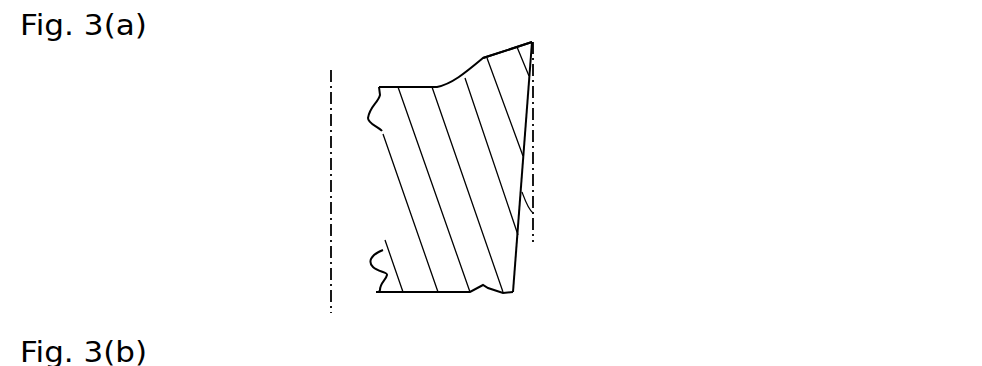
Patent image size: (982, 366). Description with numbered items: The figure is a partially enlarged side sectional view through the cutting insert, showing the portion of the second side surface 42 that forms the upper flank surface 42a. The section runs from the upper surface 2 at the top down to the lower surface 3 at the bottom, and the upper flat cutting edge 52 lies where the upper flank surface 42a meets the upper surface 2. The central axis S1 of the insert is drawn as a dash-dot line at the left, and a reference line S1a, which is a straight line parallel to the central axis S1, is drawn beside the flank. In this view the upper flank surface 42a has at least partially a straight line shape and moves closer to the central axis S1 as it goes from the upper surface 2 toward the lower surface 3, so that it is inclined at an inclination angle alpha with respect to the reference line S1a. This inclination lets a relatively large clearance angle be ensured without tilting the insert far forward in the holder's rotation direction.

In FIG. 3A, the upper surface 2 is at (419, 86).
In FIG. 3B, the upper surface 2 is at (417, 365).
In FIG. 3A, the lower surface 3 is at (442, 292).
In FIG. 3A, the upper flat cutting edge 52 is at (533, 42).
In FIG. 3A, the second side surface 42 is at (515, 153).
In FIG. 3A, the upper flank surface 42a is at (515, 265).
In FIG. 3A, the central axis S1 is at (330, 193).
In FIG. 3A, the reference line S1a is at (535, 152).